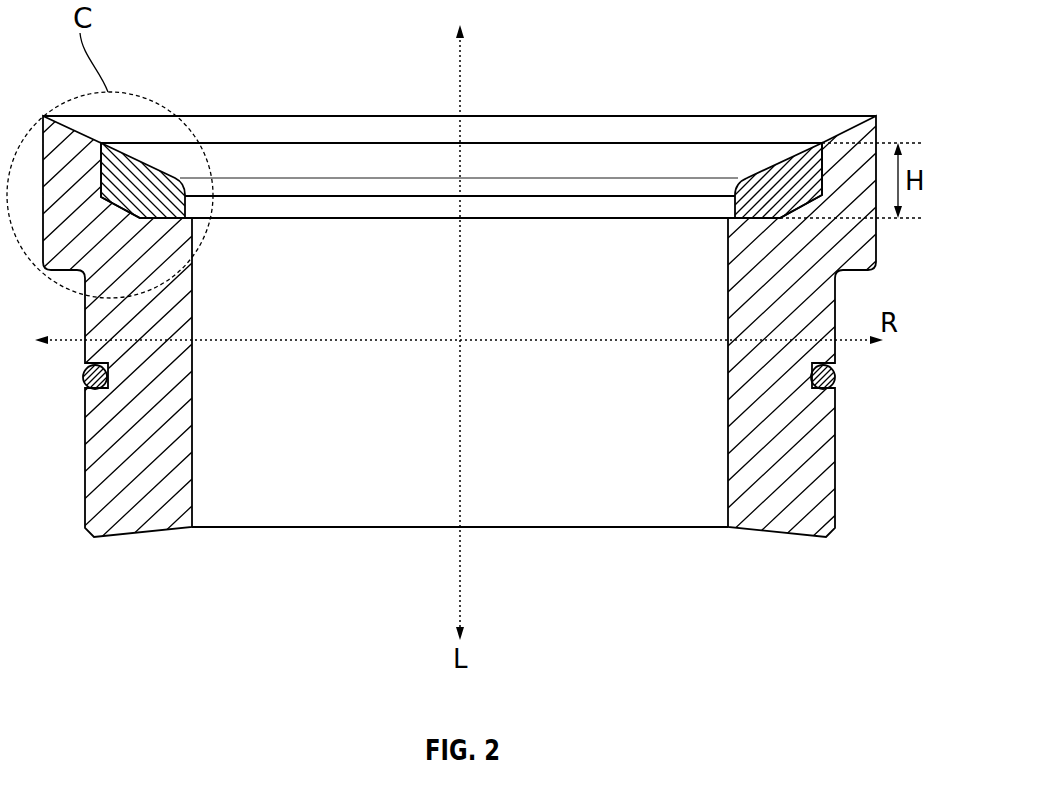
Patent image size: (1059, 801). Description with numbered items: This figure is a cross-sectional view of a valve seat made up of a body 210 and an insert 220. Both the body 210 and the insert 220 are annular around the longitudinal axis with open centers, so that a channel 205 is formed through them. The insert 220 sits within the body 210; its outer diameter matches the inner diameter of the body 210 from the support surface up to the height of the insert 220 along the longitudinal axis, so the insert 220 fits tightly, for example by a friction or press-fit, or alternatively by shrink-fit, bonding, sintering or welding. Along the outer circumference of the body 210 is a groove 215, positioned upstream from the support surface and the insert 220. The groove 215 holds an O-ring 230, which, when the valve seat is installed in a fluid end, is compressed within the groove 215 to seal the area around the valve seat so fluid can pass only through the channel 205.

The channel 205 is at (403, 453).
The body 210 is at (843, 138).
The groove 215 is at (822, 393).
The insert 220 is at (773, 177).
The O-ring 230 is at (833, 390).